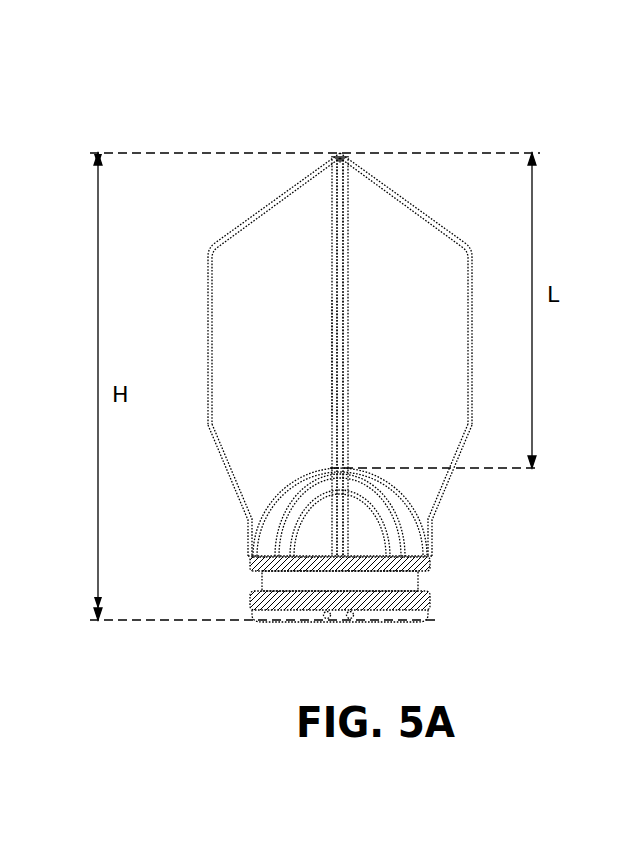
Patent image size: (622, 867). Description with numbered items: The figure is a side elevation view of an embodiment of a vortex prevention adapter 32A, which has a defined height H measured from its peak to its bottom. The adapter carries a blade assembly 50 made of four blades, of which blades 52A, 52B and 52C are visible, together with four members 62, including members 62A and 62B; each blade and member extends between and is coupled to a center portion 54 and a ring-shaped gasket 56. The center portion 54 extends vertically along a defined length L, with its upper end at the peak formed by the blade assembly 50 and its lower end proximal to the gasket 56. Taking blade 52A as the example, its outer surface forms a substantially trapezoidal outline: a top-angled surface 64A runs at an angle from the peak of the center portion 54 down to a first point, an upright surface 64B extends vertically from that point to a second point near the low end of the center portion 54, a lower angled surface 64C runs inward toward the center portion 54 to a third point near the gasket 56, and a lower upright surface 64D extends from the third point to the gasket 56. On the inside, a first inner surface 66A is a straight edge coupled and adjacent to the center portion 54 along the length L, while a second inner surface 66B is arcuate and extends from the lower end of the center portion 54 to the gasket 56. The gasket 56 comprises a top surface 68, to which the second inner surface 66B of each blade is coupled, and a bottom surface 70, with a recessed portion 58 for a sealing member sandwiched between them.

The vortex prevention adapter 32A is at (292, 110).
The blade assembly 50 is at (245, 184).
The center portion 54 is at (340, 153).
The blade 52C is at (350, 228).
The blade 52B is at (300, 282).
The blade 52A is at (414, 282).
The top-angled surface 64A is at (446, 226).
The upright surface 64B is at (470, 397).
The first inner surface 66A is at (348, 366).
The second inner surface 66B is at (392, 510).
The top surface 68 is at (327, 555).
The member 62A is at (420, 519).
The member 62B is at (290, 533).
The lower angled surface 64C is at (442, 493).
The lower upright surface 64D is at (432, 538).
The recessed portion 58 is at (262, 580).
The gasket 56 is at (250, 598).
The bottom surface 70 is at (425, 613).
The members 62 is at (610, 444).